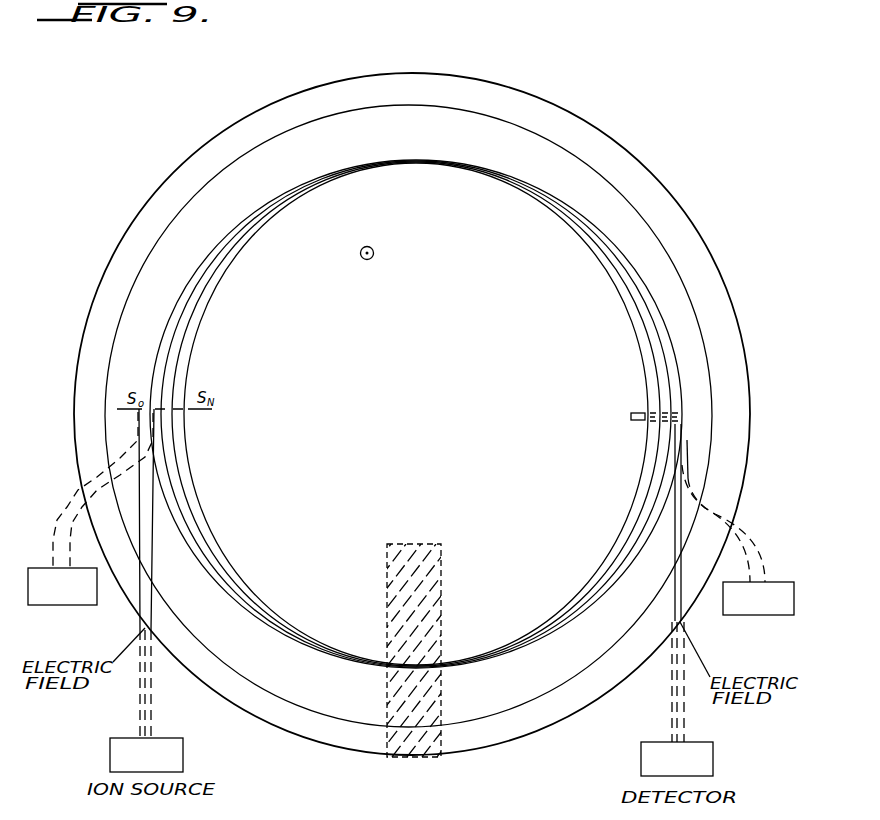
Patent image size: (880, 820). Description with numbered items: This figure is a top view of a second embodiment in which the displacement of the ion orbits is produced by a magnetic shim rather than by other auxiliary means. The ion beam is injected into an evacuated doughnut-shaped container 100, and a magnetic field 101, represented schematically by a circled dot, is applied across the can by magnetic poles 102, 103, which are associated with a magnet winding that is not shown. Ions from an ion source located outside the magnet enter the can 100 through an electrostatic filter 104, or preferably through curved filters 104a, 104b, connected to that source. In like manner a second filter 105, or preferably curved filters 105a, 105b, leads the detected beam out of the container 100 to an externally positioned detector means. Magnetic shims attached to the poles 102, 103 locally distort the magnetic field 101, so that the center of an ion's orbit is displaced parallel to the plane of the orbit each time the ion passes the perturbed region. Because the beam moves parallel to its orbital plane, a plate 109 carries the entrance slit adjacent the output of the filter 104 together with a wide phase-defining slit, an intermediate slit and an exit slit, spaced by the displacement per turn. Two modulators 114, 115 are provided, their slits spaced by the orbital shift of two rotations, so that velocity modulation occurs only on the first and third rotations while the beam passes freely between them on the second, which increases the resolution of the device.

The evacuated doughnut-shaped container 100 is at (527, 130).
The magnetic field 101 is at (374, 256).
The magnetic pole 102 is at (423, 416).
The magnetic pole 103 is at (638, 168).
The electrostatic filter 104 is at (155, 550).
The curved filter 104a is at (76, 490).
The curved filter 104b is at (63, 606).
The second filter 105 is at (674, 556).
The curved filter 105a is at (756, 537).
The curved filter 105b is at (762, 615).
The plate 109 is at (192, 411).
The modulator 114 is at (631, 416).
The modulator 115 is at (664, 423).